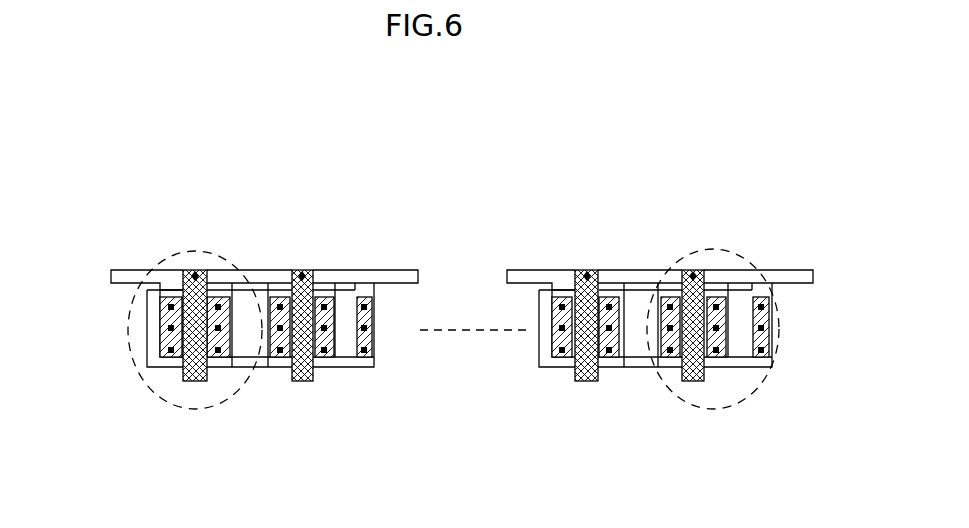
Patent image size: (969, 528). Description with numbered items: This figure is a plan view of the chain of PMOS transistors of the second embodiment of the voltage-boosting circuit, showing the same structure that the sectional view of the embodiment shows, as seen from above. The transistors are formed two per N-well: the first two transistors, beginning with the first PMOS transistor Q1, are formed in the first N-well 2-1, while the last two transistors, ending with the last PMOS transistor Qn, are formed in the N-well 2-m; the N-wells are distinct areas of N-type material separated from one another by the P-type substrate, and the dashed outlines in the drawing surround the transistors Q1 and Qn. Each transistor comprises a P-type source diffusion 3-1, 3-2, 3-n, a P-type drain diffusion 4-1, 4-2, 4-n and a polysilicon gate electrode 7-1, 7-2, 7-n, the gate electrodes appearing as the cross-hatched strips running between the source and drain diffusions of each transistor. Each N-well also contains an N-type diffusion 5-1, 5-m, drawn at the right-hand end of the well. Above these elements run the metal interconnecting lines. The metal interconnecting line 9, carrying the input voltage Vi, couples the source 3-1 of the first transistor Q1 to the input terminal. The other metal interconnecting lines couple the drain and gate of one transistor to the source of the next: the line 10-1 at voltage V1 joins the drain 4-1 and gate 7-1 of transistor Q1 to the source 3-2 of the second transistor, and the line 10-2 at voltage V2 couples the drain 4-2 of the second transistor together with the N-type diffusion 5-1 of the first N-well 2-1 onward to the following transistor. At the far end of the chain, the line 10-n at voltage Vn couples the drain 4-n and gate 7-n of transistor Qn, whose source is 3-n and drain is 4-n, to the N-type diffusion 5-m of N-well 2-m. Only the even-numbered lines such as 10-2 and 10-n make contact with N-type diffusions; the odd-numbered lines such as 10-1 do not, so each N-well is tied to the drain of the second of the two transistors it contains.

The metal interconnecting line 9 is at (120, 270).
The first N-well 2-1 is at (271, 367).
The N-well 2-m is at (660, 367).
The P-type source diffusion 3-1 is at (170, 300).
The P-type source diffusion 3-2 is at (280, 300).
The P-type source diffusion 3-n is at (668, 300).
The P-type drain diffusion 4-1 is at (210, 300).
The P-type drain diffusion 4-2 is at (323, 300).
The P-type drain diffusion 4-n is at (718, 300).
The N-type diffusion 5-1 is at (372, 345).
The N-type diffusion 5-m is at (772, 345).
The polysilicon gate electrode 7-1 is at (193, 381).
The polysilicon gate electrode 7-2 is at (303, 381).
The polysilicon gate electrode 7-n is at (700, 381).
The metal interconnecting line 10-1 is at (246, 272).
The metal interconnecting line 10-2 is at (362, 272).
The metal interconnecting line 10-n is at (778, 270).
The first PMOS transistor Q1 is at (158, 402).
The last PMOS transistor Qn is at (683, 407).
The input voltage Vi is at (86, 274).
The node voltage V1 is at (235, 275).
The node voltage V2 is at (396, 272).
The node voltage Vn is at (798, 270).